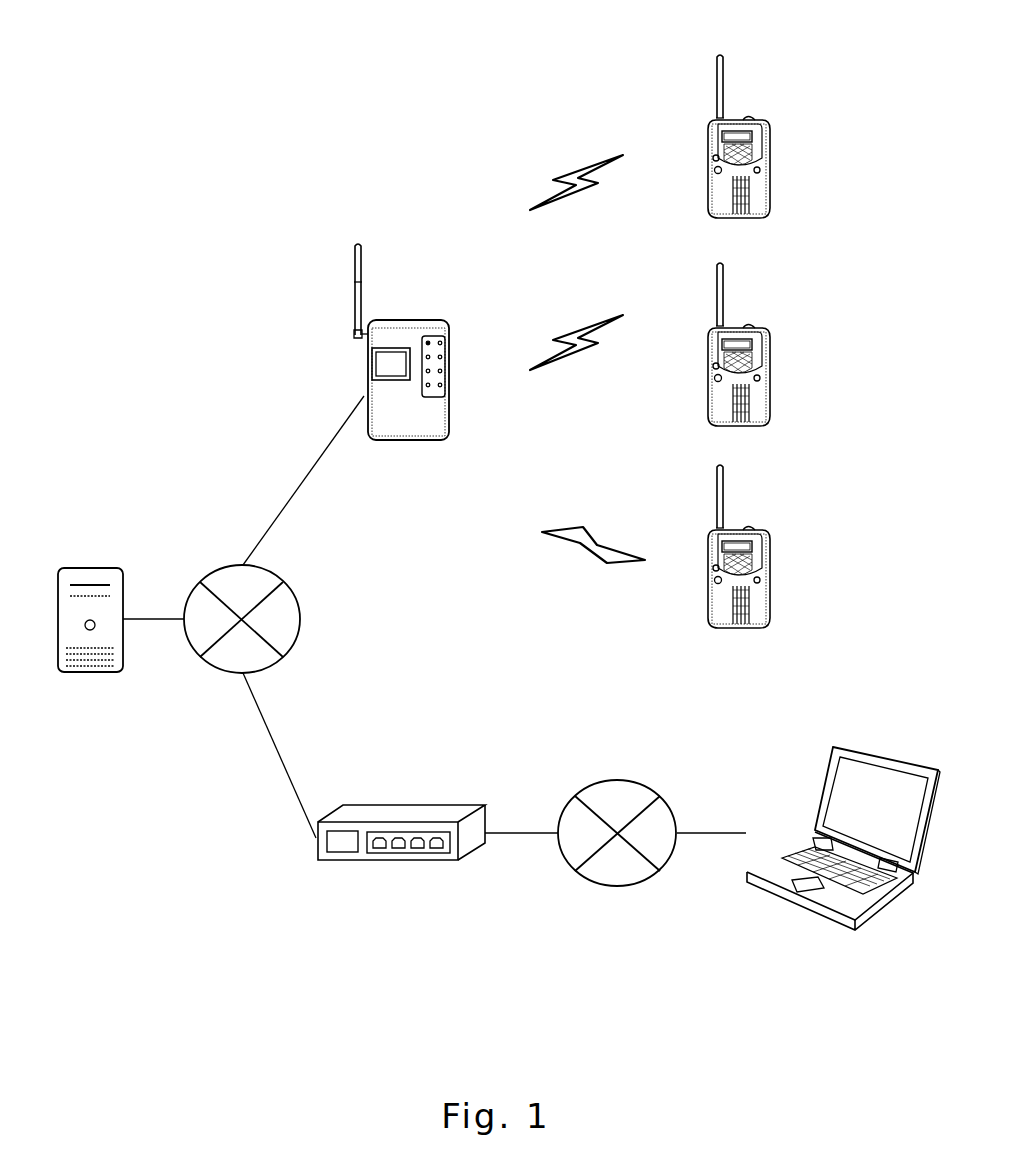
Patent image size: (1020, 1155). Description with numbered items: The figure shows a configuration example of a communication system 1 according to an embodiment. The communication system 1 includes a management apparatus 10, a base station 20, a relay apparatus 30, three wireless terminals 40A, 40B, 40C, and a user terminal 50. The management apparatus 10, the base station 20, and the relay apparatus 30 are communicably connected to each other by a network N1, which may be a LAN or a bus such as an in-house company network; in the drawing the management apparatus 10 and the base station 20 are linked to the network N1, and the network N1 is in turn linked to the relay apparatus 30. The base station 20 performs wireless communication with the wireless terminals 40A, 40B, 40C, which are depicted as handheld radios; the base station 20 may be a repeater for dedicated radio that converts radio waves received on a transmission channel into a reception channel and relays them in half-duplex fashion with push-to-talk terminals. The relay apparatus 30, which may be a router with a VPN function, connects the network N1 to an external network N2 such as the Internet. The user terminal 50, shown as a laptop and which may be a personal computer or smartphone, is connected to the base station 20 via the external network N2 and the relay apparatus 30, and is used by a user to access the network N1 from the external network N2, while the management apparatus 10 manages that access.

The communication system 1 is at (444, 70).
The management apparatus 10 is at (95, 565).
The base station 20 is at (412, 320).
The relay apparatus 30 is at (458, 805).
The network N1 is at (296, 592).
The external network N2 is at (648, 786).
The wireless terminal 40A is at (773, 142).
The wireless terminal 40B is at (773, 343).
The wireless terminal 40C is at (773, 551).
The user terminal 50 is at (850, 748).